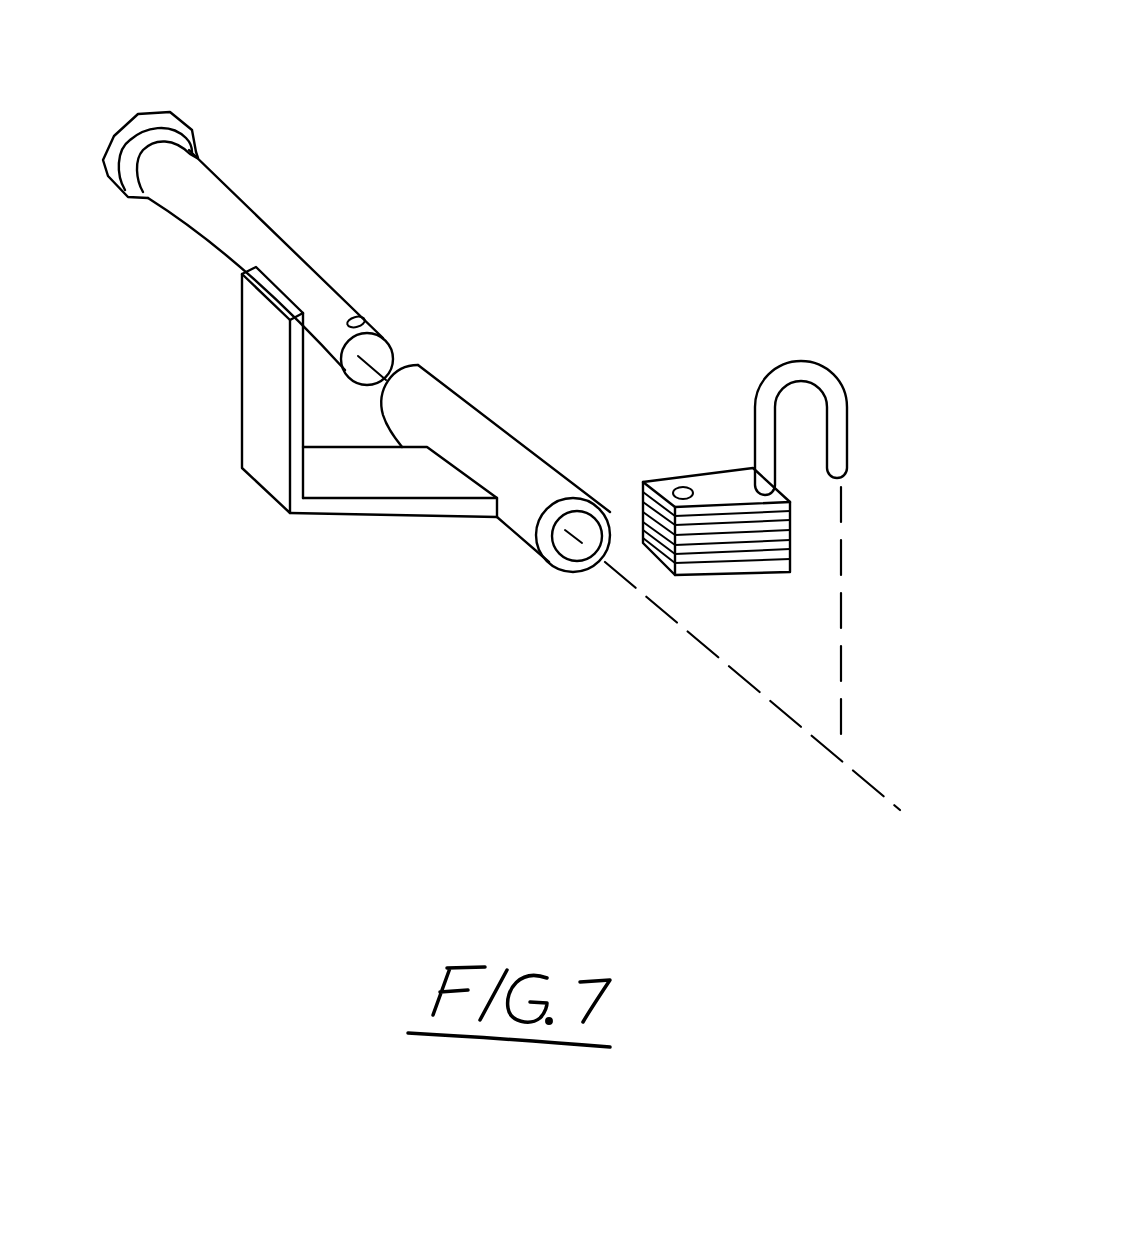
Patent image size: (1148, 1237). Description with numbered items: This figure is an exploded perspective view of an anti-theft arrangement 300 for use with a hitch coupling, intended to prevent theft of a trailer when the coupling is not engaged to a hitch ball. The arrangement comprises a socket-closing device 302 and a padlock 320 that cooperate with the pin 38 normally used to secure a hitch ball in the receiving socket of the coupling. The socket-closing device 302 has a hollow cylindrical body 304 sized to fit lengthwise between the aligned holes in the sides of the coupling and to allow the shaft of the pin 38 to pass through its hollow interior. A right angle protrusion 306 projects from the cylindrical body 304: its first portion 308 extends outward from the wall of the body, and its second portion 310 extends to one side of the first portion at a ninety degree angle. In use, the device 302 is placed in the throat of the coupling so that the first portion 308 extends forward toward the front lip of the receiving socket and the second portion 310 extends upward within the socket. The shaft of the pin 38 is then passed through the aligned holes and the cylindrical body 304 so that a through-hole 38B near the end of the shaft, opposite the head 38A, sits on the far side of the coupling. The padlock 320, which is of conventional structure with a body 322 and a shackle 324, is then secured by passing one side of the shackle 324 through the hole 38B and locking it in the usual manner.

The pin 38 is at (263, 248).
The head 38A is at (148, 122).
The through-hole 38B is at (357, 316).
The anti-theft arrangement 300 is at (465, 726).
The socket-closing device 302 is at (471, 355).
The hollow cylindrical body 304 is at (497, 467).
The right angle protrusion 306 is at (345, 512).
The first portion 308 is at (373, 478).
The second portion 310 is at (267, 413).
The padlock 320 is at (742, 353).
The body 322 is at (708, 493).
The shackle 324 is at (837, 418).